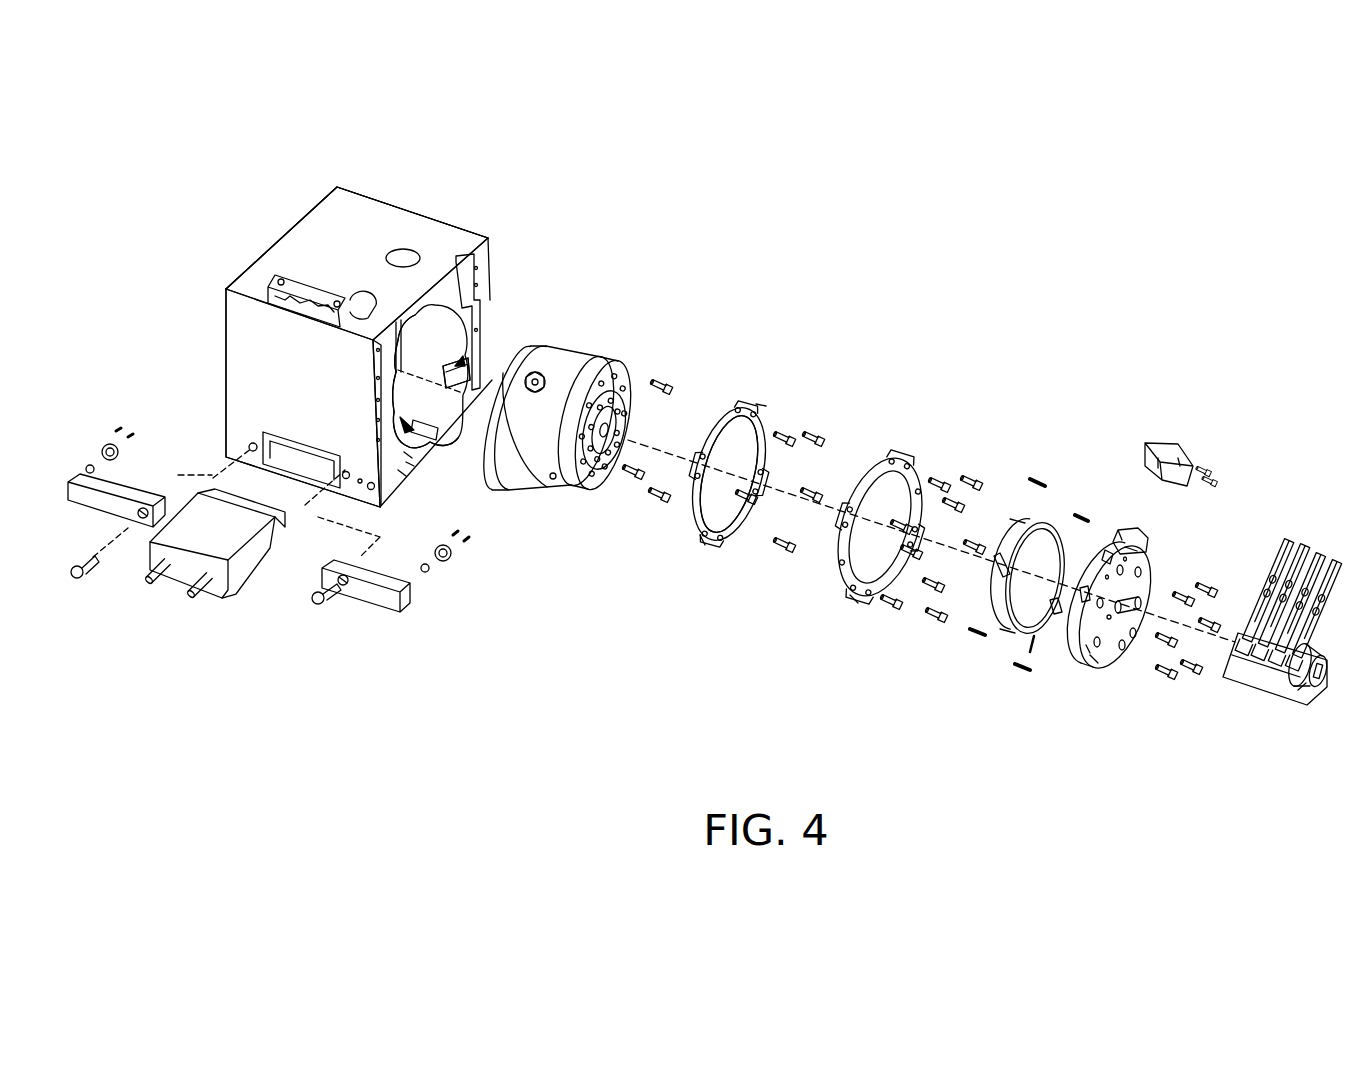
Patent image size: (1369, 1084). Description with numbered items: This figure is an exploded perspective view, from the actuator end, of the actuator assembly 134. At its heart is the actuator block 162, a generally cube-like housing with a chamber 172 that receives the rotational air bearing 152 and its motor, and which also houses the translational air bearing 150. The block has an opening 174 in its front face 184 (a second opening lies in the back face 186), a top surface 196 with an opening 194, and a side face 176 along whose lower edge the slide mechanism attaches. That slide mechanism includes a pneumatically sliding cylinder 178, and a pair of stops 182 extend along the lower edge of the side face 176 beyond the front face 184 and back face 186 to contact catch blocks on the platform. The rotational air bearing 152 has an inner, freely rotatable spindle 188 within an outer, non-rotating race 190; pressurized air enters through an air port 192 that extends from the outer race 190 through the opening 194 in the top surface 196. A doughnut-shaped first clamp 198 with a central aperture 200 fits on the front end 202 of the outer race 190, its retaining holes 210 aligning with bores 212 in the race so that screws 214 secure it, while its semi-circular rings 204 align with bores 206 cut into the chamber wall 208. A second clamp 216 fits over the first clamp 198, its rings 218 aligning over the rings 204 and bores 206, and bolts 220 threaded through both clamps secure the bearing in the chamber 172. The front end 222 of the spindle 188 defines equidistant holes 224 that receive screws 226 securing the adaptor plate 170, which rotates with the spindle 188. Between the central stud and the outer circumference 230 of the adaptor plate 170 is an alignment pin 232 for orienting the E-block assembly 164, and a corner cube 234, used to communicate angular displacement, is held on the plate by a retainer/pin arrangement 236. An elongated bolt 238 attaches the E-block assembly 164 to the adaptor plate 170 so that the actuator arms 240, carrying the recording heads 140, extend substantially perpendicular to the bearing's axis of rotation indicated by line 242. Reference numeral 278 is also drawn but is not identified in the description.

The actuator assembly 134 is at (514, 256).
The recording heads 140 is at (1292, 545).
The translational air bearing 150 is at (398, 477).
The rotational air bearing 152 is at (668, 379).
The actuator block 162 is at (236, 280).
The E-block assembly 164 is at (1243, 705).
The adaptor plate 170 is at (1098, 647).
The chamber 172 is at (447, 327).
The opening 174 is at (226, 433).
The side face 176 is at (238, 318).
The pneumatically sliding cylinder 178 is at (217, 553).
The stops 182 is at (78, 477).
The front face 184 is at (452, 282).
The back face 186 is at (270, 262).
The spindle 188 is at (627, 420).
The outer race 190 is at (565, 358).
The air port 192 is at (534, 395).
The opening 194 is at (360, 309).
The top surface 196 is at (300, 248).
The first clamp 198 is at (748, 405).
The central aperture 200 is at (748, 442).
The front end 202 is at (596, 365).
The semi-circular rings 204 is at (762, 420).
The bores 206 is at (448, 365).
The chamber wall 208 is at (433, 398).
The retaining holes 210 is at (706, 538).
The bores 212 is at (555, 478).
The screws 214 is at (790, 548).
The second clamp 216 is at (900, 462).
The rings 218 is at (853, 600).
The bolts 220 is at (936, 616).
The front end 222 is at (625, 470).
The holes 224 is at (628, 400).
The screws 226 is at (1222, 590).
The outer circumference 230 is at (1097, 570).
The alignment pin 232 is at (1098, 657).
The corner cube 234 is at (1167, 460).
The retainer/pin arrangement 236 is at (1140, 536).
The elongated bolt 238 is at (1300, 680).
The actuator arms 240 is at (1317, 635).
The line 242 is at (1000, 545).
The boss 278 is at (1143, 575).